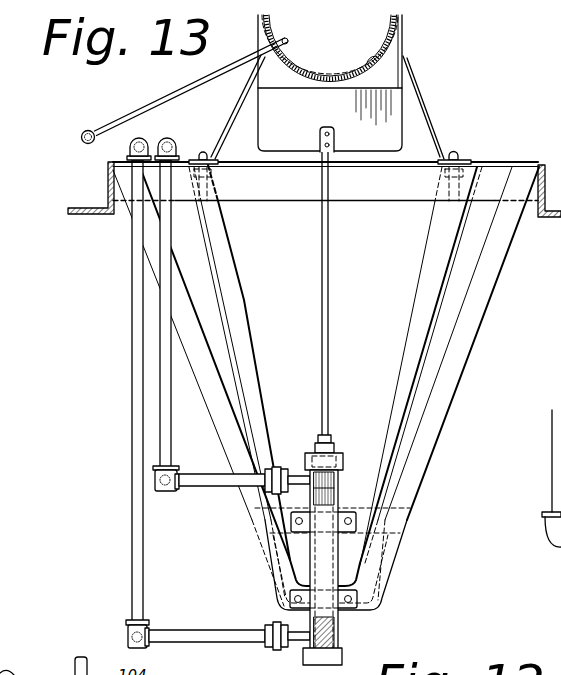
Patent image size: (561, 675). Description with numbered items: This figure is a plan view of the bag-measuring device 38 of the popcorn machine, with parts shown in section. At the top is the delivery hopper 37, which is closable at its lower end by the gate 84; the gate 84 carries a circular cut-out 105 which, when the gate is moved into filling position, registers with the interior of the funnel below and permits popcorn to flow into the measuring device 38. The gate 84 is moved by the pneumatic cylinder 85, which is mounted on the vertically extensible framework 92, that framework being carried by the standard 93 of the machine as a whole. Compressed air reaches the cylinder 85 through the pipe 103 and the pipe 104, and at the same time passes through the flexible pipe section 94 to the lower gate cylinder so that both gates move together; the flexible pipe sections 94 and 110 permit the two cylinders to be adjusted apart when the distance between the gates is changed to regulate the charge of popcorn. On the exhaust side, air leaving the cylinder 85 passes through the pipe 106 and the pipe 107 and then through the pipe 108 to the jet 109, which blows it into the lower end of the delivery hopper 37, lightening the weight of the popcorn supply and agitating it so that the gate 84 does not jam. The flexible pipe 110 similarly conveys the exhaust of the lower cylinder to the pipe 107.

The delivery hopper 37 is at (395, 32).
The bag-measuring device 38 is at (418, 43).
The circular cut-out 105 is at (388, 53).
The gate 84 is at (394, 104).
The jet 109 is at (228, 70).
The pipe 108 is at (83, 143).
The pipe 103 is at (141, 140).
The pipe 107 is at (177, 143).
The standard 93 is at (85, 214).
The vertically extensible framework 92 is at (413, 270).
The pipe 104 is at (132, 378).
The pipe 106 is at (160, 413).
The flexible pipe section 110 is at (166, 493).
The pneumatic cylinder 85 is at (346, 483).
The flexible pipe section 94 is at (127, 625).